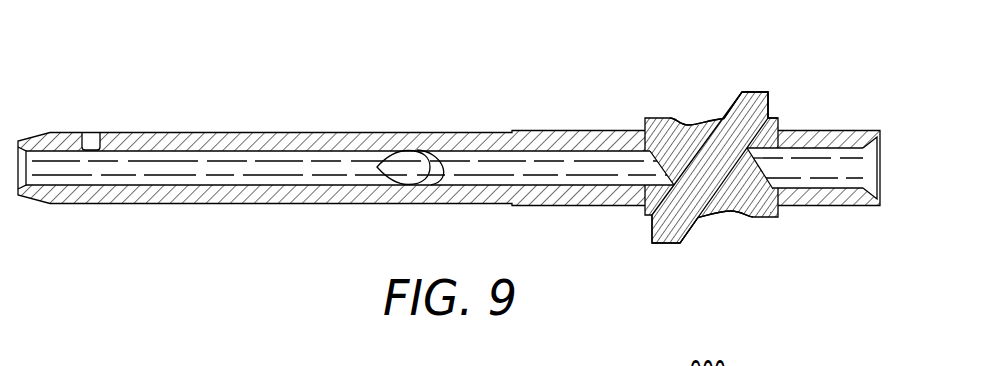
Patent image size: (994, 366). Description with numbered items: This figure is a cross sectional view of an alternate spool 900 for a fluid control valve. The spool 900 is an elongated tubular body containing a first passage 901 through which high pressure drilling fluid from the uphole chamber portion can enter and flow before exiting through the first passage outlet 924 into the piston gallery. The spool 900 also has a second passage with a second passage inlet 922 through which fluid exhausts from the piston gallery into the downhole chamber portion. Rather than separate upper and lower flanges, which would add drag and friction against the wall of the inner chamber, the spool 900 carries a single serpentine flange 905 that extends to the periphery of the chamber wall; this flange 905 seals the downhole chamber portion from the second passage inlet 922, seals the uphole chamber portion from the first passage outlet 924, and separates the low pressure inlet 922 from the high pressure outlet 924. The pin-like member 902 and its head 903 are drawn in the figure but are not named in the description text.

The spool 900 is at (200, 132).
The first passage 901 is at (478, 167).
The pin 902 is at (728, 112).
The pin head 903 is at (770, 103).
The serpentine flange 905 is at (752, 92).
The second passage inlet 922 is at (728, 227).
The first passage outlet 924 is at (688, 113).